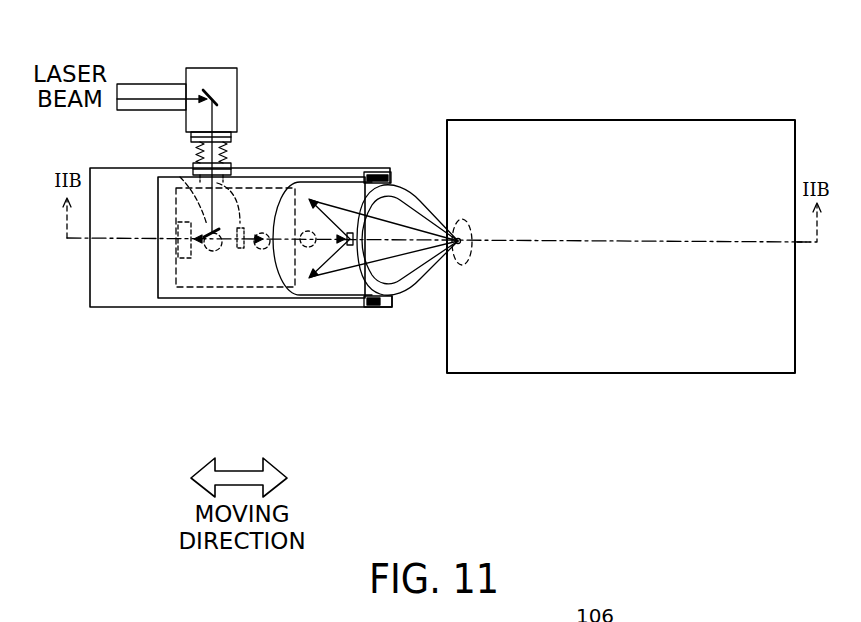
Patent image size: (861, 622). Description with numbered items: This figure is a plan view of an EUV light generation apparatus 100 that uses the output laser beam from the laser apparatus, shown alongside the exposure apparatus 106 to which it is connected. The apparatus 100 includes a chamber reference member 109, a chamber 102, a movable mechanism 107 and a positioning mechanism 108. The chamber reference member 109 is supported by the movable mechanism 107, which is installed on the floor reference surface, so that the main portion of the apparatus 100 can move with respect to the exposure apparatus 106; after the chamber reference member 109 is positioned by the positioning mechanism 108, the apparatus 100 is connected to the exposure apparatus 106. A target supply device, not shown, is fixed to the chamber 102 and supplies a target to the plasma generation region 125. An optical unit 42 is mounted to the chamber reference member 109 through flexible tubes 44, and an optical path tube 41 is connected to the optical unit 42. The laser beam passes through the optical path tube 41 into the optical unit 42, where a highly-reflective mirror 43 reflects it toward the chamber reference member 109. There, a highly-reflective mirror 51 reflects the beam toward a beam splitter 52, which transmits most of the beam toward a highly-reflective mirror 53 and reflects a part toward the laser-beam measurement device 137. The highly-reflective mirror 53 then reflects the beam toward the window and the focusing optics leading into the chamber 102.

The optical path tube 41 is at (157, 83).
The optical unit 42 is at (200, 68).
The highly-reflective mirror 43 is at (213, 92).
The flexible tubes 44 is at (224, 160).
The highly-reflective mirror 51 is at (176, 188).
The beam splitter 52 is at (181, 172).
The highly-reflective mirror 53 is at (259, 248).
The EUV light generation apparatus 100 is at (305, 76).
The chamber 102 is at (343, 288).
The exposure apparatus 106 is at (620, 120).
The movable mechanism 107 is at (301, 169).
The positioning mechanism 108 is at (385, 172).
The chamber reference member 109 is at (166, 293).
The plasma generation region 125 is at (370, 296).
The laser-beam measurement device 137 is at (175, 248).